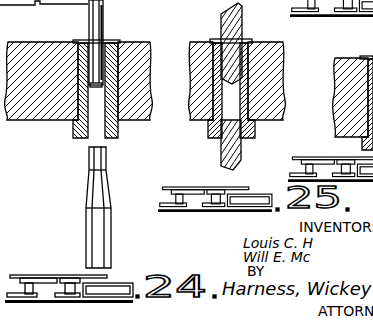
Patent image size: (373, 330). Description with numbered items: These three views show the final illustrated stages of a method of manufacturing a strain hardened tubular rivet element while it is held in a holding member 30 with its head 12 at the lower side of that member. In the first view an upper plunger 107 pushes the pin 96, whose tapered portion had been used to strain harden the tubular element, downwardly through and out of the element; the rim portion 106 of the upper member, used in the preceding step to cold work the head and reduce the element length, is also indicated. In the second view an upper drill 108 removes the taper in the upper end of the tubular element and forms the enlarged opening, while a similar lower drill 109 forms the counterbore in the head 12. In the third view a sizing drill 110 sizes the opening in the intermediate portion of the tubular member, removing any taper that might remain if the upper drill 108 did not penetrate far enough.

In FIG. 24, the head 12 is at (75, 130).
In FIG. 25, the head 12 is at (208, 128).
In FIG. 26, the head 12 is at (365, 149).
In FIG. 24, the holding member 30 is at (62, 40).
In FIG. 25, the holding member 30 is at (256, 42).
In FIG. 24, the pin 96 is at (105, 230).
In FIG. 24, the rim portion 106 is at (108, 38).
In FIG. 24, the upper plunger 107 is at (103, 18).
In FIG. 25, the upper drill 108 is at (219, 33).
In FIG. 25, the lower drill 109 is at (219, 160).
In FIG. 26, the sizing drill 110 is at (372, 35).